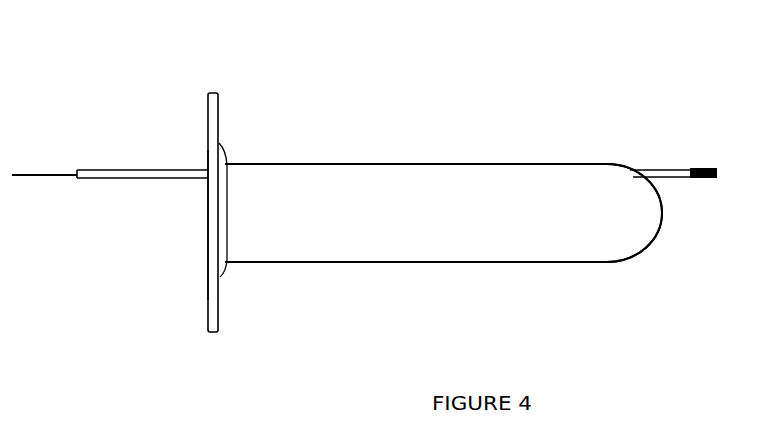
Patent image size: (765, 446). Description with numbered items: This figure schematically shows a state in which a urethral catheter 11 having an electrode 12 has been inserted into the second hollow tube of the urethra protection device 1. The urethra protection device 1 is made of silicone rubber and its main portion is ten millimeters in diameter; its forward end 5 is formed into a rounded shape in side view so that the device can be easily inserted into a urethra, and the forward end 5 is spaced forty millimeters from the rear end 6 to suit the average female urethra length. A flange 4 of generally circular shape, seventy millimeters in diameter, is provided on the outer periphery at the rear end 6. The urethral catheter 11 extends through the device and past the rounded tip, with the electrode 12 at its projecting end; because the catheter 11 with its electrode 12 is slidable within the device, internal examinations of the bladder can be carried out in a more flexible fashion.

The urethra protection device 1 is at (527, 158).
The flange 4 is at (212, 92).
The forward end 5 is at (663, 220).
The rear end 6 is at (204, 258).
The urethral catheter 11 is at (93, 180).
The electrode 12 is at (708, 181).